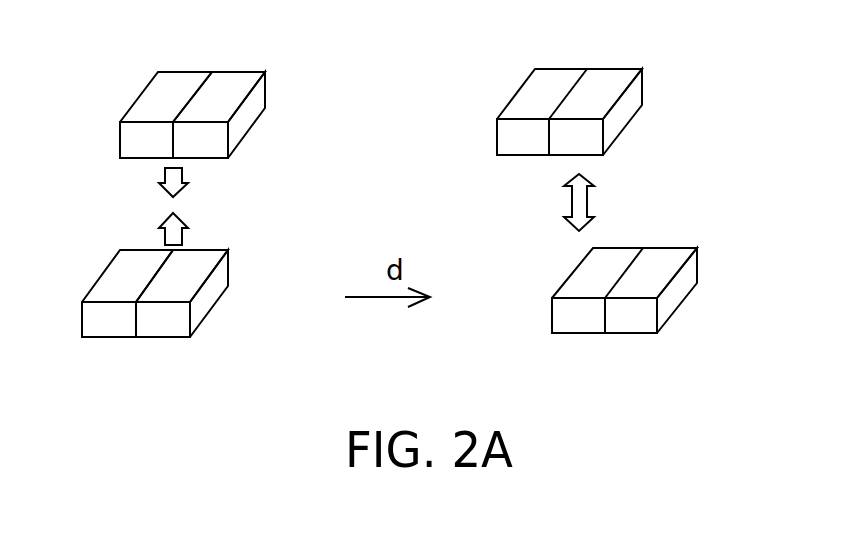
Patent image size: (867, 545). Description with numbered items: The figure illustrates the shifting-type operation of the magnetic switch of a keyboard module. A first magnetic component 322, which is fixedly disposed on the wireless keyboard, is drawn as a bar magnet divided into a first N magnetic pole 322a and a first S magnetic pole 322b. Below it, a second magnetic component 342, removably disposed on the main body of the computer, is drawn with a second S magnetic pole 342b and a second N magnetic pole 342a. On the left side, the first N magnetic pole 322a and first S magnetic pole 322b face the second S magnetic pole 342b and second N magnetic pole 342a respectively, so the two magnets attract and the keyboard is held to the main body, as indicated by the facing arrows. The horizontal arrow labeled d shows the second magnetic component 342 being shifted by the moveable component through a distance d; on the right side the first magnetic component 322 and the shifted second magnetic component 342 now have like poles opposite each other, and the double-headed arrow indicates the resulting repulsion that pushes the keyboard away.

The first magnetic component 322 is at (757, 58).
The first north magnetic pole 322a is at (145, 93).
The first south magnetic pole 322b is at (250, 100).
The second magnetic component 342 is at (763, 273).
The second north magnetic pole 342a is at (207, 277).
The second south magnetic pole 342b is at (103, 275).